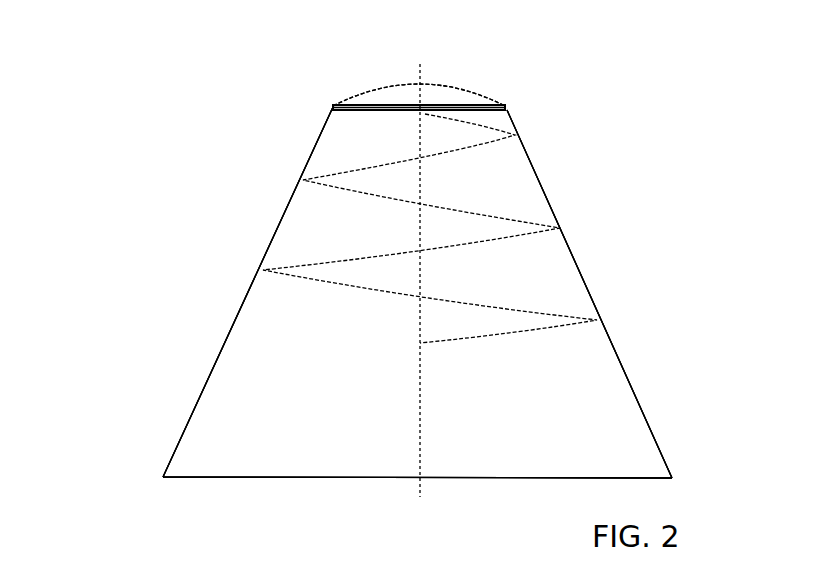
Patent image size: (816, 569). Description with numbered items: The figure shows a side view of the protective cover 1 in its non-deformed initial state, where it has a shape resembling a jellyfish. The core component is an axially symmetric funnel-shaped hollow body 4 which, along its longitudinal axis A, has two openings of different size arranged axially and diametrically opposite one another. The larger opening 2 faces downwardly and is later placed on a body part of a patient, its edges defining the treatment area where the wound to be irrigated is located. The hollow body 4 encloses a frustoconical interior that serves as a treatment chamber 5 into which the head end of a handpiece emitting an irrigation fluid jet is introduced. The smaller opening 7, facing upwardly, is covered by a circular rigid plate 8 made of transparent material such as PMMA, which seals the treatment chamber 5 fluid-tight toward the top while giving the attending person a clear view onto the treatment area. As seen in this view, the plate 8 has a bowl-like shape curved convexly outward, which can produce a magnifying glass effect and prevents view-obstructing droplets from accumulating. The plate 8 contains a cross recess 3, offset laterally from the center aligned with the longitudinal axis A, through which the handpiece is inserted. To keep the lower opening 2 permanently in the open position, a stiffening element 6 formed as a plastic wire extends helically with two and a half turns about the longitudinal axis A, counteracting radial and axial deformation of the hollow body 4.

The protective cover 1 is at (216, 104).
The larger opening 2 is at (360, 465).
The cross recess 3 is at (417, 98).
The hollow body 4 is at (566, 378).
The treatment chamber 5 is at (365, 327).
The stiffening element 6 is at (549, 233).
The smaller opening 7 is at (333, 105).
The plate 8 is at (468, 96).
The longitudinal axis A is at (424, 72).